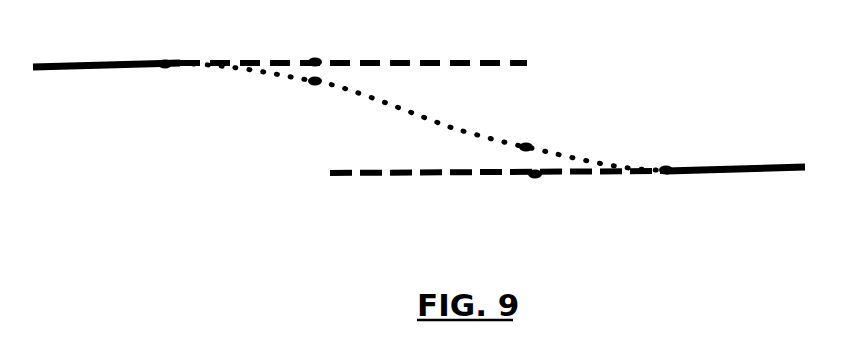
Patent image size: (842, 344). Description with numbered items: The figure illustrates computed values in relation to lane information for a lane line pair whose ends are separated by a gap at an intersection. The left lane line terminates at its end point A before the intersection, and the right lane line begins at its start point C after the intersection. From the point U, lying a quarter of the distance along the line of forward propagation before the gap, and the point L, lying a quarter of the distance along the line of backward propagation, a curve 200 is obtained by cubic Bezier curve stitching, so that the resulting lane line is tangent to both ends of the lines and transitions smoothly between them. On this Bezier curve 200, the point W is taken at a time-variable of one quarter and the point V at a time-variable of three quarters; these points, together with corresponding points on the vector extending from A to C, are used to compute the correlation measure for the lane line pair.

The curve 200 is at (459, 129).
The end point of left lane line A is at (147, 42).
The point on the line of forward propagation U is at (315, 40).
The point on the Bezier curve at t=0.25 W is at (308, 98).
The point on the Bezier curve at t=0.75 V is at (534, 123).
The point on the line of backward propagation L is at (534, 197).
The start point of lane line after the intersection C is at (694, 152).